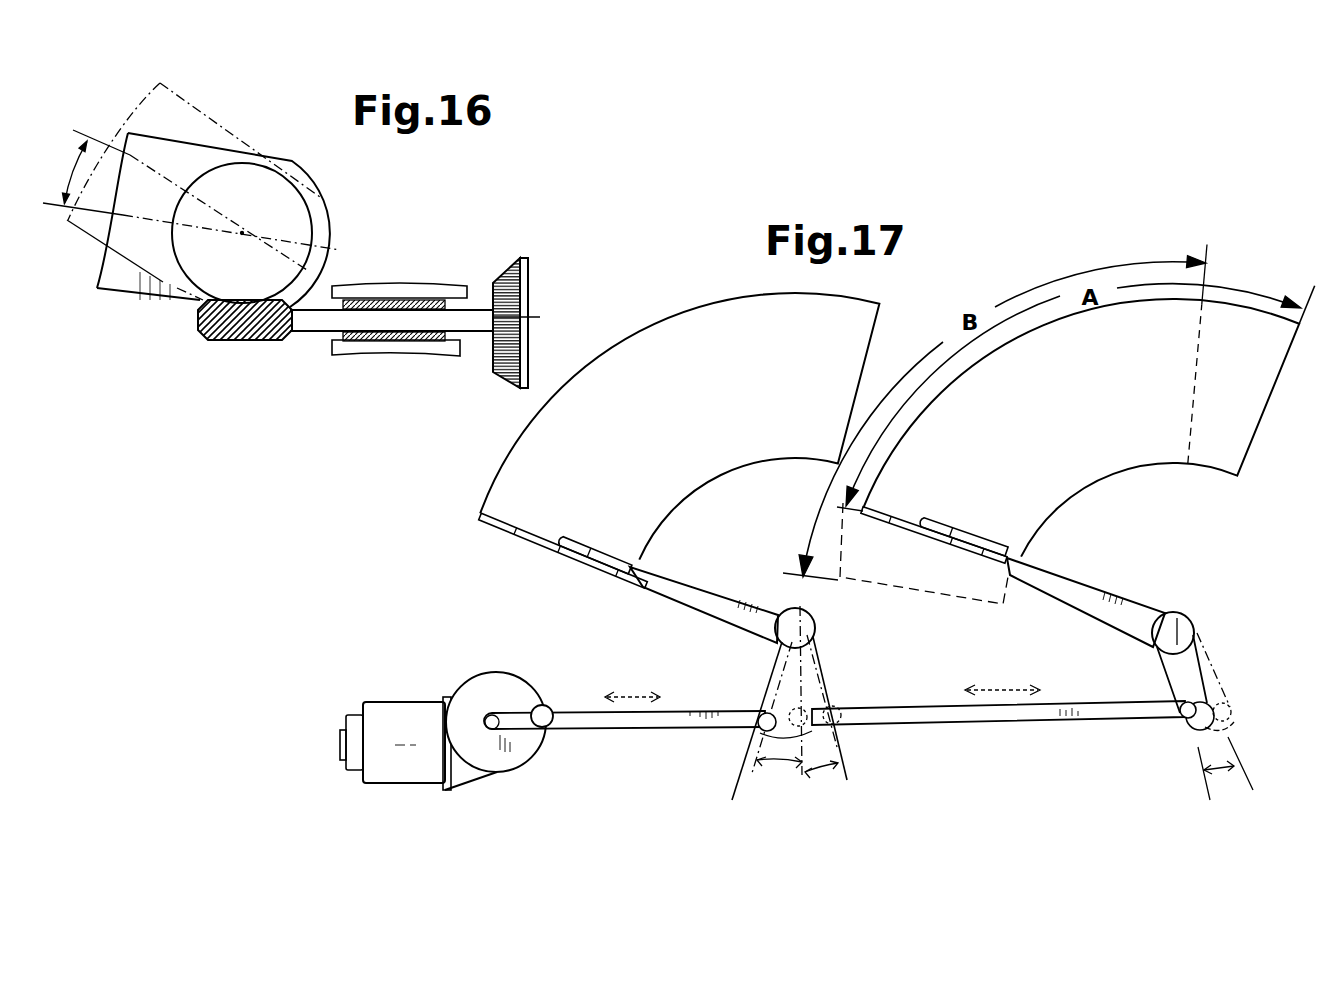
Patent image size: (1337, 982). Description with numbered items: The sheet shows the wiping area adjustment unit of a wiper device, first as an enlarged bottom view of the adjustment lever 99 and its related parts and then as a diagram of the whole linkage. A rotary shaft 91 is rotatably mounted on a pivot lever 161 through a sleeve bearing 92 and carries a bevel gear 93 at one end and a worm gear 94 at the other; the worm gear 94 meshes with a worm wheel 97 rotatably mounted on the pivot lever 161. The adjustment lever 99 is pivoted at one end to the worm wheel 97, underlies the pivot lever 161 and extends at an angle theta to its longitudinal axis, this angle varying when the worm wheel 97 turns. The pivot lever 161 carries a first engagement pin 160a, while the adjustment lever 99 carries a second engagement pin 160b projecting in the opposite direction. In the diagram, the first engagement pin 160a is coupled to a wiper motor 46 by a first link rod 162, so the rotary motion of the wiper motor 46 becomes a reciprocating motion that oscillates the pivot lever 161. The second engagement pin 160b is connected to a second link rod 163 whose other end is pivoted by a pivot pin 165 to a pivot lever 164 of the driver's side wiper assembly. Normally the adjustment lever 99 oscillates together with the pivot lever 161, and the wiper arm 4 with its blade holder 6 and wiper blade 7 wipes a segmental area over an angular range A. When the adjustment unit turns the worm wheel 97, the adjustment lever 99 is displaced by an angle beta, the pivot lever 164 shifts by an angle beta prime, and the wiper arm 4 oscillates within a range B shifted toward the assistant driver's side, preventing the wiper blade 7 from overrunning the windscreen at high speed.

In FIG. 16, the adjustment lever 99 is at (203, 112).
In FIG. 16, the pivot lever 161 is at (232, 151).
In FIG. 17, the pivot lever 161 is at (763, 662).
In FIG. 16, the worm wheel 97 is at (322, 190).
In FIG. 16, the worm gear 94 is at (230, 338).
In FIG. 16, the rotary shaft 91 is at (328, 332).
In FIG. 16, the sleeve bearing 92 is at (418, 341).
In FIG. 16, the bevel gear 93 is at (540, 317).
In FIG. 17, the wiper blade 7 is at (525, 538).
In FIG. 17, the blade holder 6 is at (608, 553).
In FIG. 17, the wiper arm 4 is at (732, 602).
In FIG. 17, the first engagement pin 160a is at (745, 734).
In FIG. 17, the second engagement pin 160b is at (793, 713).
In FIG. 17, the first link rod 162 is at (613, 727).
In FIG. 17, the second link rod 163 is at (979, 725).
In FIG. 17, the pivot lever 164 is at (1160, 672).
In FIG. 17, the pivot pin 165 is at (1180, 730).
In FIG. 17, the wiper motor 46 is at (410, 773).